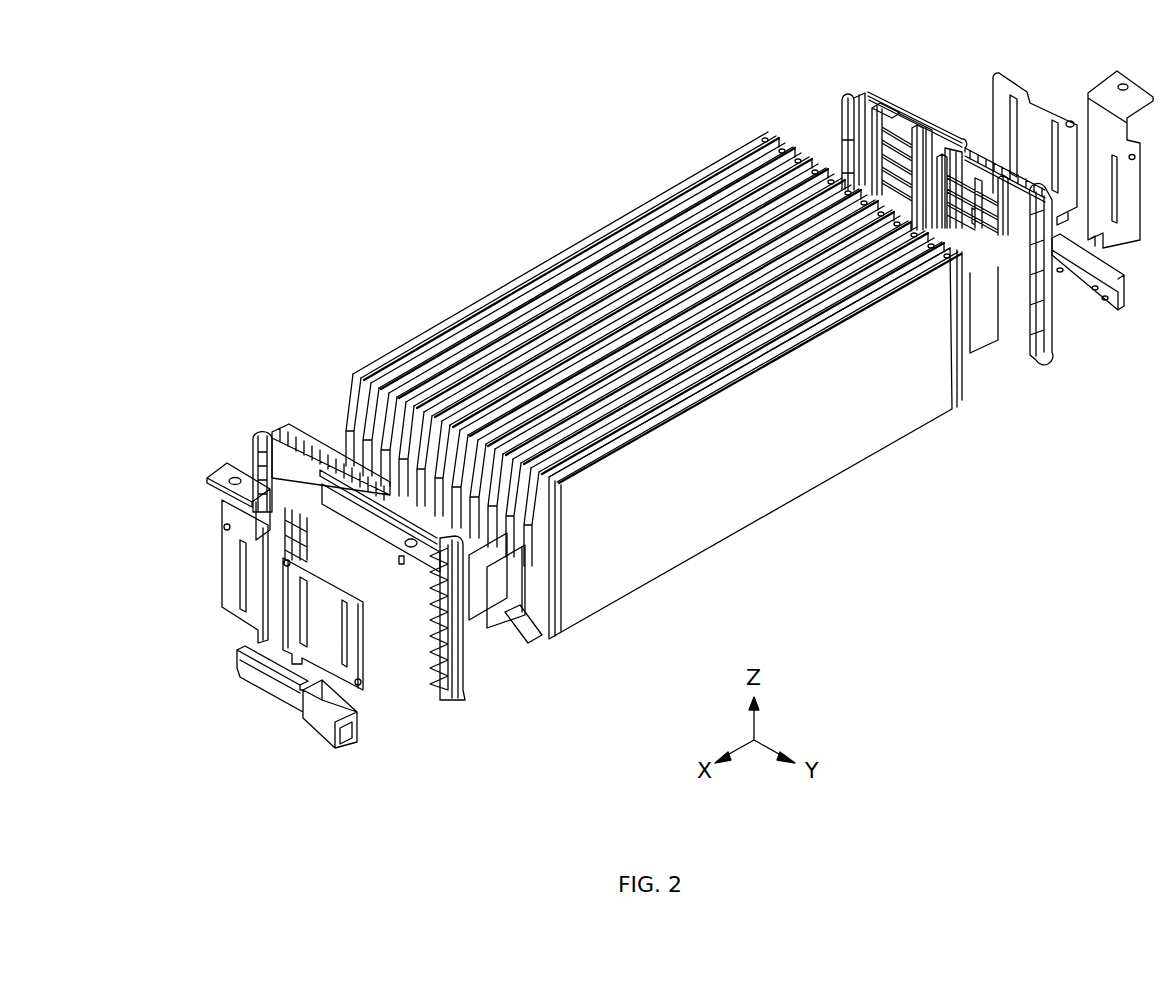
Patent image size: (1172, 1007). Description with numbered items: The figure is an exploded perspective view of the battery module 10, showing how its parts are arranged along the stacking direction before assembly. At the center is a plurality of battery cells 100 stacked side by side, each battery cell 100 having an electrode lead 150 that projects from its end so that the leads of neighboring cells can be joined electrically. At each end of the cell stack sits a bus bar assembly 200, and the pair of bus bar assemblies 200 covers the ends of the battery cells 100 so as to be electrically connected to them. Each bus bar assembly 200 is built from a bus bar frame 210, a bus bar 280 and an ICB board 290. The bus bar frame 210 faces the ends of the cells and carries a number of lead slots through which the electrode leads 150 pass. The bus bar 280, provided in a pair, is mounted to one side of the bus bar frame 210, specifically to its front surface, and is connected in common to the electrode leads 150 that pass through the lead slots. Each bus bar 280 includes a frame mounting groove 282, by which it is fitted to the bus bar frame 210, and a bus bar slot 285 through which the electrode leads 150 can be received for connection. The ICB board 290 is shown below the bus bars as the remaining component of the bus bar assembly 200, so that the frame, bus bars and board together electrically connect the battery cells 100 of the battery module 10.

The battery module 10 is at (399, 157).
The battery cell 100 is at (616, 204).
The electrode lead 150 is at (500, 612).
The bus bar assembly 200 is at (915, 58).
The bus bar frame 210 is at (256, 412).
The bus bar 280 is at (190, 470).
The frame mounting groove 282 is at (224, 527).
The bus bar slot 285 is at (241, 550).
The ICB board 290 is at (230, 692).